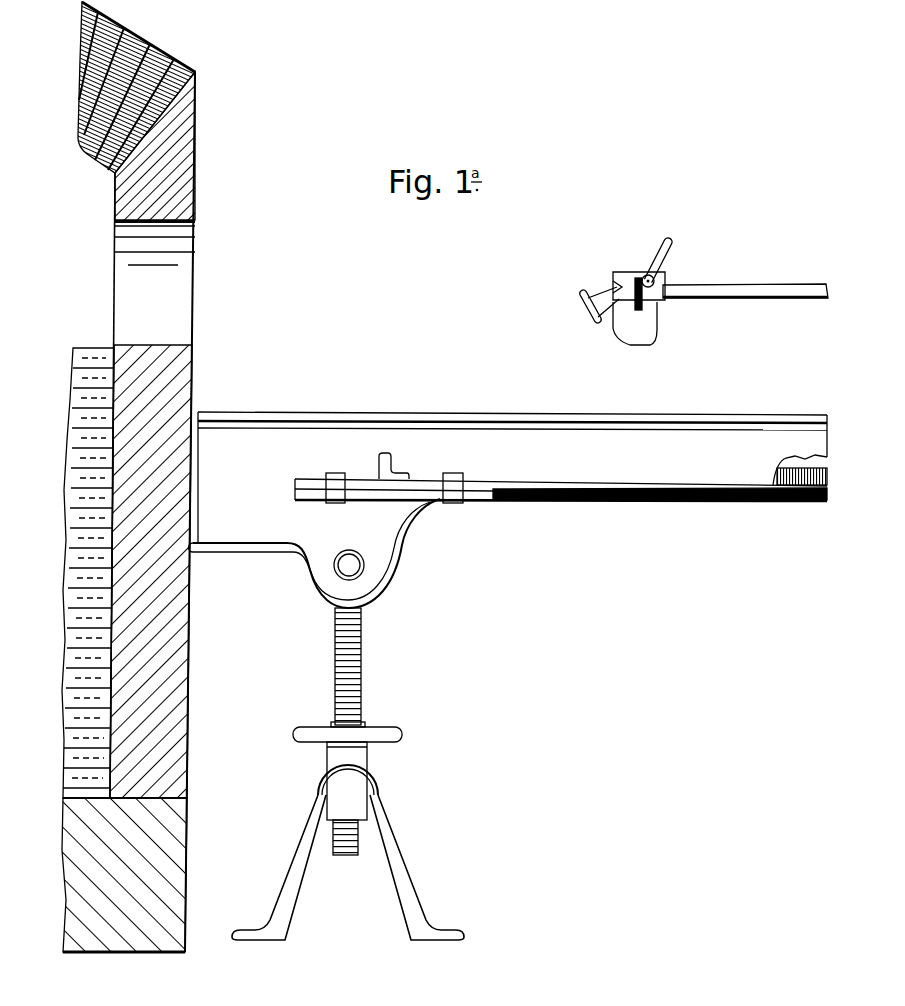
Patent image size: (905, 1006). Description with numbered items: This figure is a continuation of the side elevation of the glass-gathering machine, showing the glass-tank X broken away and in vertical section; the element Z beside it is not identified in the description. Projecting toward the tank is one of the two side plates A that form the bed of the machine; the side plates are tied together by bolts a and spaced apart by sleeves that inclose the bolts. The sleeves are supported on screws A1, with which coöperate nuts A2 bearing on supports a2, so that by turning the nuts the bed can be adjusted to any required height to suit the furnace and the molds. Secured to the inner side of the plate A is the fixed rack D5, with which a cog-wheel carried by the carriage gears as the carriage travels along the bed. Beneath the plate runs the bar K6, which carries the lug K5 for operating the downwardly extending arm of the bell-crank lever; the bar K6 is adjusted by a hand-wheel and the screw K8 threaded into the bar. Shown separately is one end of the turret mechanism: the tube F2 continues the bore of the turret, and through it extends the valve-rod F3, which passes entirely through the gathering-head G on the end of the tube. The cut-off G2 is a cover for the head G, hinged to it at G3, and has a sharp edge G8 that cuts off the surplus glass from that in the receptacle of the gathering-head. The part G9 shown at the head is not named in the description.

The brick wall Z is at (84, 362).
The glass-tank X is at (193, 351).
The side plate A is at (520, 435).
The fixed rack D5 is at (778, 470).
The lug K5 is at (387, 463).
The bar K6 is at (315, 492).
The screw K8 is at (526, 500).
The bolt a is at (355, 564).
The screw A1 is at (360, 655).
The nut A2 is at (385, 734).
The support a2 is at (364, 753).
The tube F2 is at (736, 290).
The valve-rod F3 is at (613, 285).
The gathering-head G is at (630, 331).
The cut-off G2 is at (583, 299).
The hinge G3 is at (658, 278).
The sharp edge G8 is at (598, 319).
The lever G9 is at (660, 249).